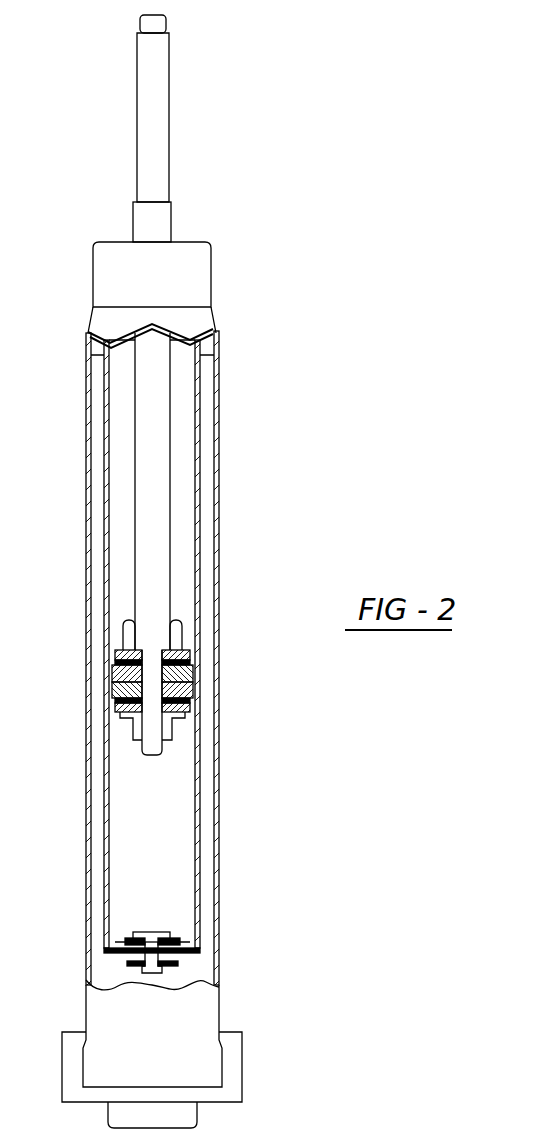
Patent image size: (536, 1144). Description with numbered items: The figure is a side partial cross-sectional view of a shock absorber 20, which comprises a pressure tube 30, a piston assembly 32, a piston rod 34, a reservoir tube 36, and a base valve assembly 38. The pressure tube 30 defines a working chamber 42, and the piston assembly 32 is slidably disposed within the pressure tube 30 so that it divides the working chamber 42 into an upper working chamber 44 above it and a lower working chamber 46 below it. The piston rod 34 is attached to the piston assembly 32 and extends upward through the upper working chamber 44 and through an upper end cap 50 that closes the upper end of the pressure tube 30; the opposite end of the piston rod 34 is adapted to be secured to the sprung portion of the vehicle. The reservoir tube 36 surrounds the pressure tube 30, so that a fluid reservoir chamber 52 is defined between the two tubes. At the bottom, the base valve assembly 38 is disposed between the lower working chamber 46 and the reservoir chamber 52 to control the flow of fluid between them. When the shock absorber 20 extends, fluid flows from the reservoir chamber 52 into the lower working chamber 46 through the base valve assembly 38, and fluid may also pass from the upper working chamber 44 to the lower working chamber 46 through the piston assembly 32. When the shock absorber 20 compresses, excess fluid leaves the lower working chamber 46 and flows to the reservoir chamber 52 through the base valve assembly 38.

The shock absorber 20 is at (296, 194).
The pressure tube 30 is at (200, 476).
The piston assembly 32 is at (188, 650).
The piston rod 34 is at (166, 464).
The reservoir tube 36 is at (88, 585).
The base valve assembly 38 is at (178, 940).
The working chamber 42 is at (171, 775).
The upper working chamber 44 is at (182, 452).
The lower working chamber 46 is at (166, 845).
The upper end cap 50 is at (195, 273).
The fluid reservoir chamber 52 is at (97, 512).